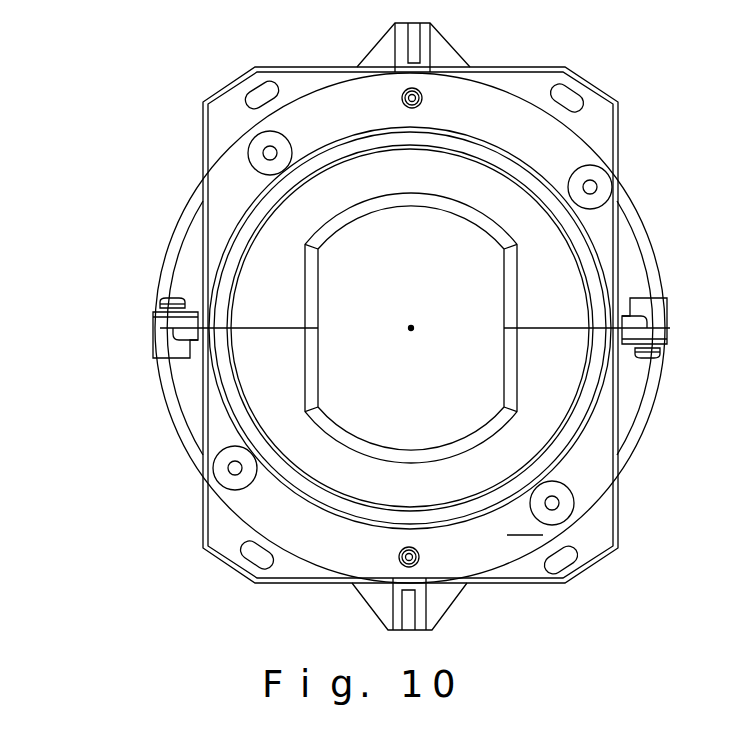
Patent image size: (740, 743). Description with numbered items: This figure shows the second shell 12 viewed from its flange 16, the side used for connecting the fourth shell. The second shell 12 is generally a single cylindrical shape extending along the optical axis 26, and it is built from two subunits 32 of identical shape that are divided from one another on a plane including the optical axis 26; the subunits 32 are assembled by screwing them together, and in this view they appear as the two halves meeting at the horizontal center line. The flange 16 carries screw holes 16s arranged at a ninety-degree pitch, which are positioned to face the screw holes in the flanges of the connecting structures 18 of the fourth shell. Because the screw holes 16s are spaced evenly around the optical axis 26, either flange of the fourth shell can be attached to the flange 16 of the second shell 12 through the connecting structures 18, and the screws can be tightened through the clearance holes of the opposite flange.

The second shell 12 is at (60, 288).
The flange 16 is at (524, 86).
The screw holes 16s is at (268, 150).
The connecting structures 18 is at (584, 248).
The optical axis 26 is at (413, 328).
The subunits 32 is at (200, 268).